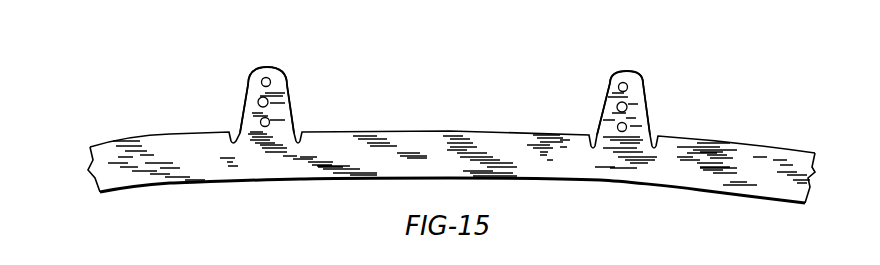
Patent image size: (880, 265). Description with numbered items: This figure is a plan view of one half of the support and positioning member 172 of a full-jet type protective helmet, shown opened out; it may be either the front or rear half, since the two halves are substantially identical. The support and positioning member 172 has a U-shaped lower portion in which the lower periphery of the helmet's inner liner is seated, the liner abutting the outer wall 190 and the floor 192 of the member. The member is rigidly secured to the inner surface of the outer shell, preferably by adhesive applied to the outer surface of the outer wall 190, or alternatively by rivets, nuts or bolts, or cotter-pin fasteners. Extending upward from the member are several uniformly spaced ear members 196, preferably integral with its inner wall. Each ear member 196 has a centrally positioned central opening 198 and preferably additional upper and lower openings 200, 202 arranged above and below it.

The support and positioning member 172 is at (140, 127).
The outer wall 190 is at (90, 175).
The floor 192 is at (152, 189).
The ear member 196 is at (250, 76).
The central opening 198 is at (291, 92).
The upper opening 200 is at (293, 71).
The lower opening 202 is at (303, 113).